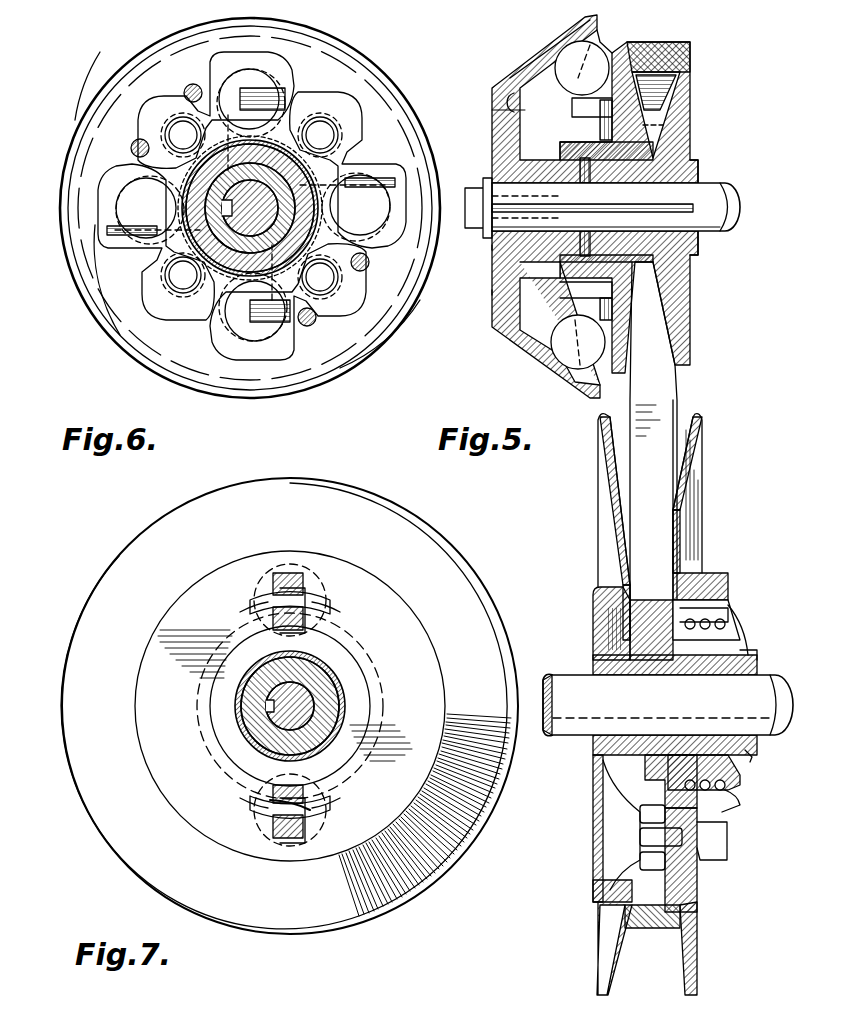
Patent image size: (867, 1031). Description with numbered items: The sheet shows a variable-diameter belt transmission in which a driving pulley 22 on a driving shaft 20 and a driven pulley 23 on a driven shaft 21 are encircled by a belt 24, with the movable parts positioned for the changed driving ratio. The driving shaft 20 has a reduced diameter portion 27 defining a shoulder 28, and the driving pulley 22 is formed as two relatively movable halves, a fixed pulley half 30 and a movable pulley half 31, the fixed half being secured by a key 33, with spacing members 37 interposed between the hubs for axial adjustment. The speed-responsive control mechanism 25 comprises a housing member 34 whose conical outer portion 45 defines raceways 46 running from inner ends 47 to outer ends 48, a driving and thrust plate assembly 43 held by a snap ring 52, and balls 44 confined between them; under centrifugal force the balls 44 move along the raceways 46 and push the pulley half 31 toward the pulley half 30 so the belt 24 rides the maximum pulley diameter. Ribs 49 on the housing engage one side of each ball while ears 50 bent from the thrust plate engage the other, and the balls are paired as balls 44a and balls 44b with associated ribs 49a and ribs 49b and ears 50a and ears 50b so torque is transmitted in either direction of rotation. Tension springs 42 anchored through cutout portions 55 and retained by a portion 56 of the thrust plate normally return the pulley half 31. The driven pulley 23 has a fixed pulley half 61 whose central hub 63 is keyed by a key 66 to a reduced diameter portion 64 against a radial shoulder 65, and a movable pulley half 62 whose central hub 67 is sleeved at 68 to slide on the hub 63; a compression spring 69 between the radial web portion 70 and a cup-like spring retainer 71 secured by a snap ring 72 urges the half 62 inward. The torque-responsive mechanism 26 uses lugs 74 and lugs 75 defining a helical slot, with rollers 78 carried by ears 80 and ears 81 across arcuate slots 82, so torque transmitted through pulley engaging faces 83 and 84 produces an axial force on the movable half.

In FIG. 5, the driving shaft 20 is at (728, 220).
In FIG. 5, the driven shaft 21 is at (570, 735).
In FIG. 5, the driving pulley 22 is at (608, 337).
In FIG. 5, the driven pulley 23 is at (660, 704).
In FIG. 7, the driven pulley 23 is at (455, 530).
In FIG. 5, the belt 24 is at (680, 50).
In FIG. 5, the speed-responsive control mechanism 25 is at (495, 348).
In FIG. 5, the torque-responsive mechanism 26 is at (677, 727).
In FIG. 5, the reduced diameter portion 27 is at (698, 178).
In FIG. 5, the shoulder 28 is at (698, 248).
In FIG. 5, the pulley half 30 is at (692, 134).
In FIG. 5, the pulley half 31 is at (670, 110).
In FIG. 5, the key 33 is at (645, 206).
In FIG. 6, the housing member 34 is at (372, 72).
In FIG. 5, the spacing members 37 is at (590, 183).
In FIG. 6, the tension springs 42 is at (150, 118).
In FIG. 6, the driving and thrust plate assembly 43 is at (190, 318).
In FIG. 5, the balls 44 is at (572, 88).
In FIG. 6, the balls 44a is at (290, 50).
In FIG. 6, the balls 44b is at (110, 250).
In FIG. 5, the balls 44b is at (466, 251).
In FIG. 5, the outer portion 45 is at (548, 55).
In FIG. 5, the raceways 46 is at (515, 78).
In FIG. 5, the inner ends 47 is at (492, 118).
In FIG. 5, the outer ends 48 is at (600, 42).
In FIG. 5, the ribs 49 is at (498, 340).
In FIG. 6, the ribs 49a is at (320, 375).
In FIG. 6, the ribs 49b is at (178, 50).
In FIG. 5, the ribs 49b is at (466, 294).
In FIG. 5, the ear 50 is at (575, 112).
In FIG. 6, the ears 50a is at (282, 95).
In FIG. 6, the ears 50b is at (368, 178).
In FIG. 5, the snap ring 52 is at (612, 292).
In FIG. 6, the cutout portions 55 is at (318, 105).
In FIG. 6, the portion 56 is at (340, 135).
In FIG. 5, the fixed pulley half 61 is at (596, 527).
In FIG. 5, the movable pulley half 62 is at (709, 493).
In FIG. 7, the movable pulley half 62 is at (440, 870).
In FIG. 5, the central hub 63 is at (755, 760).
In FIG. 5, the reduced diameter portion 64 is at (758, 755).
In FIG. 7, the reduced diameter portion 64 is at (338, 690).
In FIG. 5, the radial shoulder 65 is at (595, 748).
In FIG. 5, the key 66 is at (745, 700).
In FIG. 7, the key 66 is at (262, 720).
In FIG. 5, the central hub 67 is at (598, 798).
In FIG. 7, the central hub 67 is at (248, 690).
In FIG. 5, the sleeve 68 is at (604, 770).
In FIG. 7, the sleeve 68 is at (265, 740).
In FIG. 5, the compression spring 69 is at (738, 800).
In FIG. 5, the radial web portion 70 is at (700, 572).
In FIG. 5, the spring retainer 71 is at (740, 618).
In FIG. 5, the snap ring 72 is at (750, 655).
In FIG. 7, the lugs 74 is at (325, 608).
In FIG. 7, the lugs 75 is at (260, 810).
In FIG. 5, the rollers 78 is at (640, 838).
In FIG. 7, the rollers 78 is at (262, 598).
In FIG. 5, the ear 80 is at (640, 814).
In FIG. 7, the ear 80 is at (270, 620).
In FIG. 5, the ear 81 is at (640, 862).
In FIG. 7, the ear 81 is at (275, 580).
In FIG. 5, the arcuate slots 82 is at (728, 842).
In FIG. 5, the pulley engaging face 83 is at (603, 452).
In FIG. 5, the pulley engaging face 84 is at (702, 435).
In FIG. 7, the pulley engaging face 84 is at (430, 830).